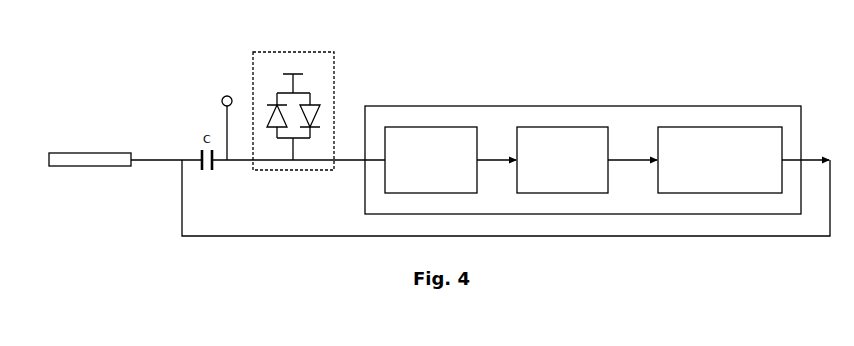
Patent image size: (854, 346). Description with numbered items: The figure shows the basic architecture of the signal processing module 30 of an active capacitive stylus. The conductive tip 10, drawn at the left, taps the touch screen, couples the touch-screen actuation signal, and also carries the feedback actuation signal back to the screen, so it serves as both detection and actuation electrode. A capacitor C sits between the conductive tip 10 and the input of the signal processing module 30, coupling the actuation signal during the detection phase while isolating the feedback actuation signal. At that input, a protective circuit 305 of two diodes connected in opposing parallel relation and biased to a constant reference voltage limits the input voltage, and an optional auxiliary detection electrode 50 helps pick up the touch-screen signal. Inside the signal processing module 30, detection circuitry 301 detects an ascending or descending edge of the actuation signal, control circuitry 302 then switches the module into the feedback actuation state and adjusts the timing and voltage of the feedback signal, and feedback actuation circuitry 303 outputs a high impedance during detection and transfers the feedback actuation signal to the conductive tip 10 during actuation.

The conductive tip 10 is at (112, 153).
The auxiliary detection electrode 50 is at (223, 95).
The protective circuit 305 is at (335, 97).
The signal processing module 30 is at (550, 105).
The detection circuitry 301 is at (431, 160).
The control circuitry 302 is at (562, 160).
The feedback actuation circuitry 303 is at (720, 160).